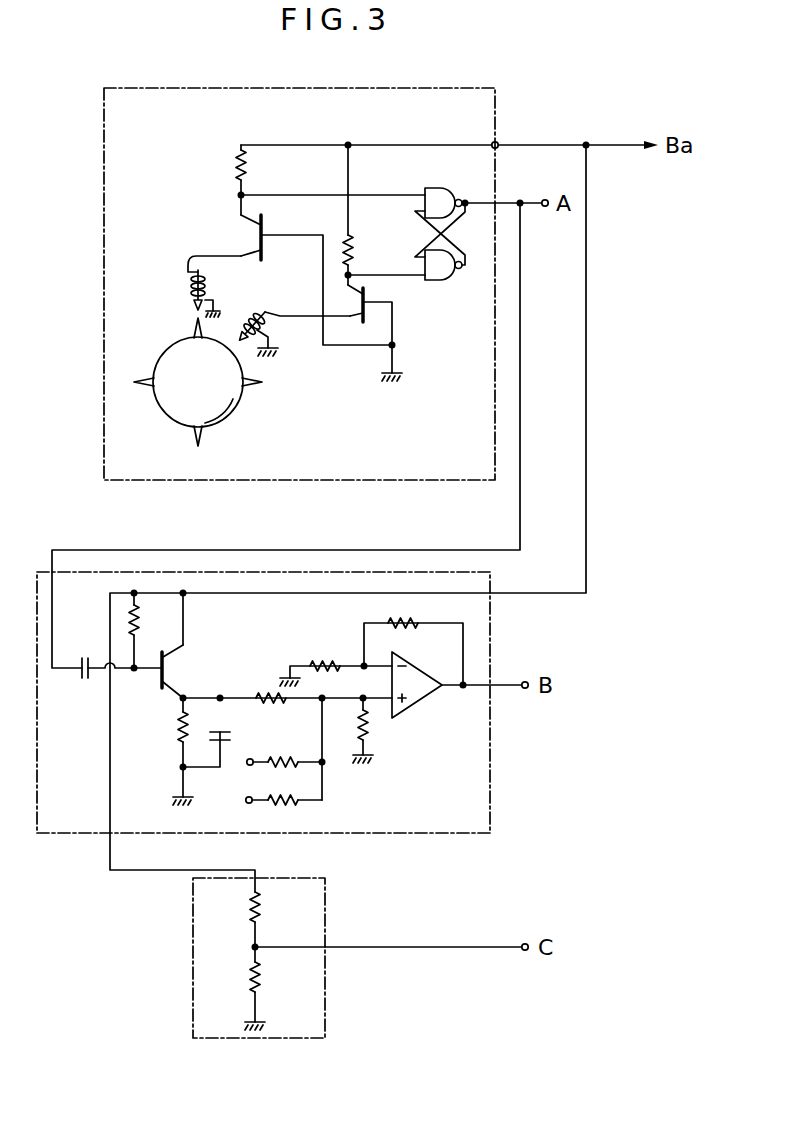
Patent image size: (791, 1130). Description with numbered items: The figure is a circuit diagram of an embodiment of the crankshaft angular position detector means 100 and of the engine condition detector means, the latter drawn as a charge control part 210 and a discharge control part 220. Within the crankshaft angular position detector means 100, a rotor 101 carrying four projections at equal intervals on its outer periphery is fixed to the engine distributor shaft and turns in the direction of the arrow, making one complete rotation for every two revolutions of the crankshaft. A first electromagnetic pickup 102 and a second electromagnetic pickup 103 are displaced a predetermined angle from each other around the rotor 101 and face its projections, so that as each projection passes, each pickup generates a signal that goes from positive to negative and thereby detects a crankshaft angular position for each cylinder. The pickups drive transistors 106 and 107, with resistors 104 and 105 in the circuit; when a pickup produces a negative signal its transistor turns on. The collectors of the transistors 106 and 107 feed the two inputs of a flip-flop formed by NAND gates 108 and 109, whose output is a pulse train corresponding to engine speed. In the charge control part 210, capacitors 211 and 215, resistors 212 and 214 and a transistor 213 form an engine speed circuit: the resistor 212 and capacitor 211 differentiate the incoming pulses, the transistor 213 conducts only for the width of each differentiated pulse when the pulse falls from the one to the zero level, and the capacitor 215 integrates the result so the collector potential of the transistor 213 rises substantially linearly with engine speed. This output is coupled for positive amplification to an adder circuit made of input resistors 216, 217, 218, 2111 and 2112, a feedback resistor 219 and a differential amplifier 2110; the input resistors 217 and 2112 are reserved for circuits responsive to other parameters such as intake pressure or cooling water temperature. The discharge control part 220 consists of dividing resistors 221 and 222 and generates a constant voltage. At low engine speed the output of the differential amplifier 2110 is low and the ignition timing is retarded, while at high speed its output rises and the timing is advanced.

The crankshaft angular position detector means 100 is at (372, 481).
The rotor 101 is at (160, 410).
The first electromagnetic pickup 102 is at (190, 288).
The second electromagnetic pickup 103 is at (262, 338).
The resistor 104 is at (235, 165).
The resistor 105 is at (353, 250).
The transistor 106 is at (252, 238).
The transistor 107 is at (356, 300).
The NAND gate 108 is at (446, 181).
The NAND gate 109 is at (442, 281).
The charge control part 210 is at (491, 762).
The capacitor 211 is at (85, 684).
The resistor 212 is at (152, 636).
The transistor 213 is at (176, 665).
The resistor 214 is at (177, 727).
The capacitor 215 is at (232, 737).
The input resistor 216 is at (268, 692).
The input resistor 217 is at (284, 768).
The input resistor 218 is at (328, 656).
The feedback resistor 219 is at (408, 616).
The differential amplifier 2110 is at (430, 704).
The input resistor 2111 is at (370, 724).
The input resistor 2112 is at (284, 806).
The discharge control part 220 is at (258, 1039).
The dividing resistor 221 is at (262, 908).
The dividing resistor 222 is at (262, 978).